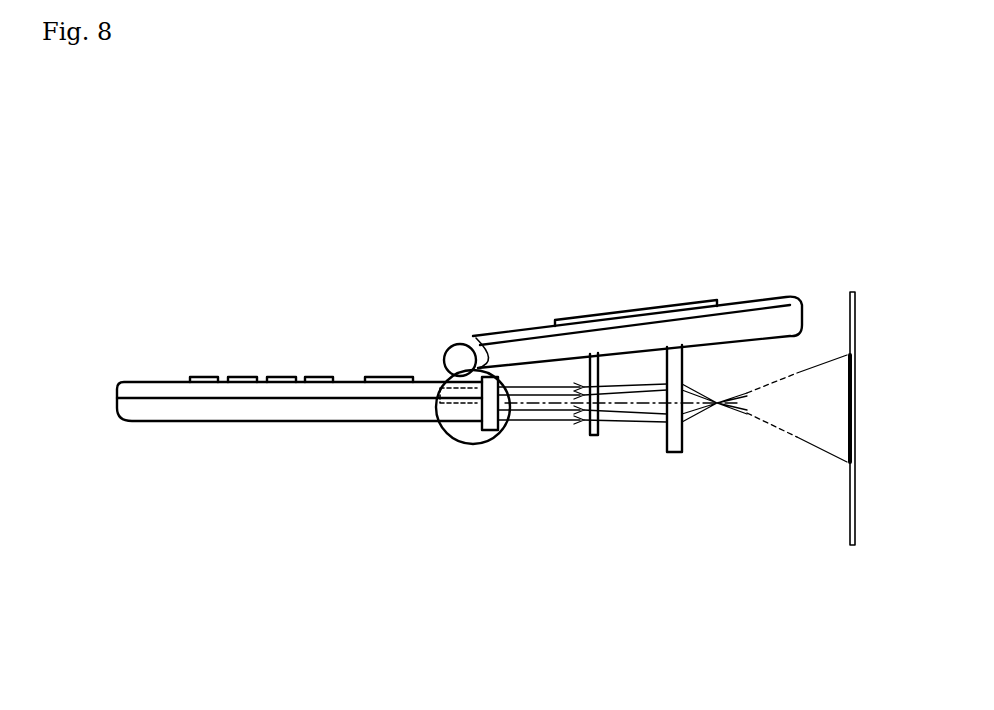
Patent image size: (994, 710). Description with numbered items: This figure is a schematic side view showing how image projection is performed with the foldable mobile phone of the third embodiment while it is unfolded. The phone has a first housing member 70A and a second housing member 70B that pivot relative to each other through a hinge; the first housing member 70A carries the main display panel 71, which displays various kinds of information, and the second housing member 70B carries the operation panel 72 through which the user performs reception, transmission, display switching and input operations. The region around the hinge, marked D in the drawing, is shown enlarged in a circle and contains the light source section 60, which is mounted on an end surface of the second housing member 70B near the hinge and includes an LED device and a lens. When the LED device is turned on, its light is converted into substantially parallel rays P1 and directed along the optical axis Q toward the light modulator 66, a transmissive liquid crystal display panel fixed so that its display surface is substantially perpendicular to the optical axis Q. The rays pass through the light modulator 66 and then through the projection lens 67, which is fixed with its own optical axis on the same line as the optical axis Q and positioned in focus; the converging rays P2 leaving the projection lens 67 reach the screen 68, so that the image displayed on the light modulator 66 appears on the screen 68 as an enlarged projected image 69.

The first housing member 70A is at (760, 300).
The second housing member 70B is at (175, 410).
The main display panel 71 is at (590, 318).
The operation panel 72 is at (280, 377).
The enlarged hinge region D is at (444, 430).
The light source section 60 is at (487, 425).
The light modulator 66 is at (595, 440).
The projection lens 67 is at (674, 455).
The light beams P1 is at (524, 387).
The converged light beams P2 is at (562, 422).
The optical axis Q is at (622, 403).
The screen 68 is at (848, 507).
The enlarged projected image 69 is at (847, 427).